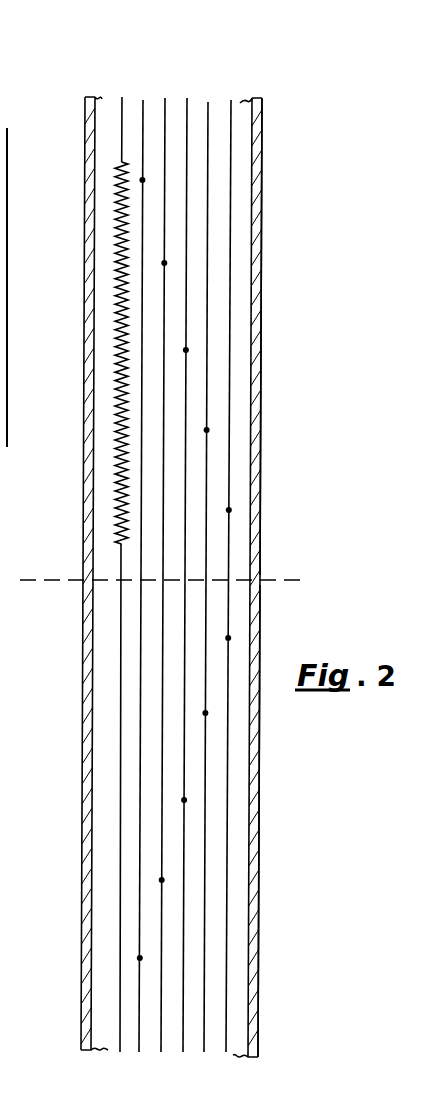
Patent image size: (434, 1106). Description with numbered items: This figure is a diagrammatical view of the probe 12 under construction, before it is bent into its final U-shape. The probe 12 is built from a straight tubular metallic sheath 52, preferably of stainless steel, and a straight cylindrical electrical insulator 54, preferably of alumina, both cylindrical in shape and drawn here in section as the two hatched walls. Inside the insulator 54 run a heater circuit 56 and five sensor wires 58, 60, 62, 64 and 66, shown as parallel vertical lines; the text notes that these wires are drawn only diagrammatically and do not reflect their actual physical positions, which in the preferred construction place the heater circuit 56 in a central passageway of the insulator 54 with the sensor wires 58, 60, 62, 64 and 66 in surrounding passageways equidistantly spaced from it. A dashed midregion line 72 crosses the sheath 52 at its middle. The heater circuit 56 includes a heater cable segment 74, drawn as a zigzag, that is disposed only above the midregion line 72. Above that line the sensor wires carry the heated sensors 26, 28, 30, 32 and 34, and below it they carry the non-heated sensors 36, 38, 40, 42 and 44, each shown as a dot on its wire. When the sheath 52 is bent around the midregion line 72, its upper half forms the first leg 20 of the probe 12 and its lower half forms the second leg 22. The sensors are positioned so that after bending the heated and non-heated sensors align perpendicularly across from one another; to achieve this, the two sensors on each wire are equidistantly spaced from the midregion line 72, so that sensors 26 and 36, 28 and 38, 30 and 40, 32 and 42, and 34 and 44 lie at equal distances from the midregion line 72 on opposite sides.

The probe 12 is at (208, 43).
The first leg 20 is at (261, 313).
The second leg 22 is at (258, 842).
The heated sensor 26 is at (142, 180).
The heated sensor 28 is at (162, 263).
The heated sensor 30 is at (185, 350).
The heated sensor 32 is at (207, 430).
The heated sensor 34 is at (228, 510).
The non-heated sensor 36 is at (140, 958).
The non-heated sensor 38 is at (162, 880).
The non-heated sensor 40 is at (185, 800).
The non-heated sensor 42 is at (204, 713).
The non-heated sensor 44 is at (227, 638).
The tubular metallic sheath 52 is at (262, 133).
The cylindrical electrical insulator 54 is at (242, 156).
The heater circuit 56 is at (122, 106).
The sensor wire 58 is at (143, 105).
The sensor wire 60 is at (165, 108).
The sensor wire 62 is at (187, 105).
The sensor wire 64 is at (209, 107).
The sensor wire 66 is at (232, 104).
The midregion line 72 is at (278, 578).
The heater cable segment 74 is at (118, 243).